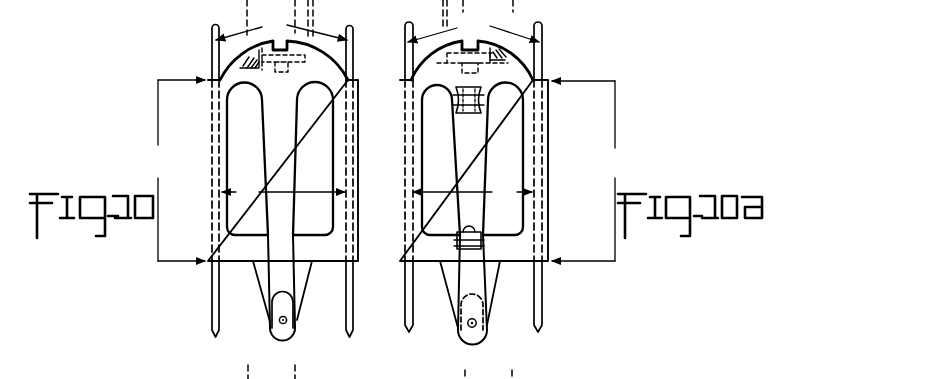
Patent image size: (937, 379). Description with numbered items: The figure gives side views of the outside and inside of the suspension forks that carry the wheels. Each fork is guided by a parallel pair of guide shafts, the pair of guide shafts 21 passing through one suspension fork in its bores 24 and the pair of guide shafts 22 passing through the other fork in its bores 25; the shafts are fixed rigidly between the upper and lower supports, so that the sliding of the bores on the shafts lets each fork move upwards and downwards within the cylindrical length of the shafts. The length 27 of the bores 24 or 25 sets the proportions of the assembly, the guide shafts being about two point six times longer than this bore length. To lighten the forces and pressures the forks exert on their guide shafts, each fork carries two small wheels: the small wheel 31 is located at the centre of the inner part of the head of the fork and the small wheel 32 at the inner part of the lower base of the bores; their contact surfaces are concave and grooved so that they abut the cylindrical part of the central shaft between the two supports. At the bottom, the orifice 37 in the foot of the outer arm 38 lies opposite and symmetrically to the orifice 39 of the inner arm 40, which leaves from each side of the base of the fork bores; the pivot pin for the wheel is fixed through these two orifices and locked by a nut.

In FIG. 10, the pair of guide shafts 21 is at (281, 26).
In FIG. 10A, the pair of guide shafts 22 is at (473, 28).
In FIG. 10, the bores 24 is at (283, 192).
In FIG. 10A, the bores 25 is at (472, 192).
In FIG. 10, the length of the bores 27 is at (175, 170).
In FIG. 10A, the length of the bores 27 is at (587, 171).
In FIG. 10A, the small wheel 31 is at (484, 108).
In FIG. 10A, the small wheel 32 is at (485, 236).
In FIG. 10, the orifice 37 is at (281, 322).
In FIG. 10, the outer arm 38 is at (280, 233).
In FIG. 10A, the outer arm 38 is at (471, 235).
In FIG. 10A, the orifice 39 is at (476, 326).
In FIG. 10, the inner arm 40 is at (265, 279).
In FIG. 10A, the inner arm 40 is at (485, 275).